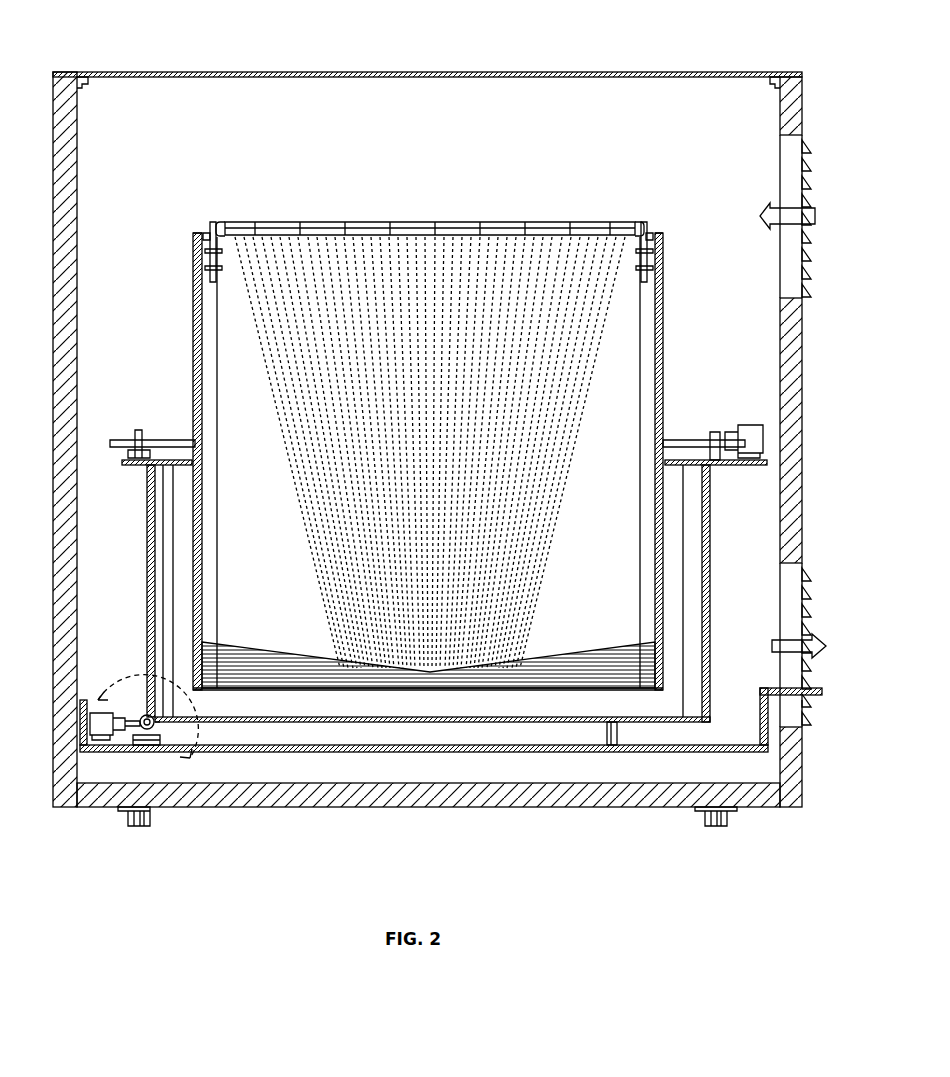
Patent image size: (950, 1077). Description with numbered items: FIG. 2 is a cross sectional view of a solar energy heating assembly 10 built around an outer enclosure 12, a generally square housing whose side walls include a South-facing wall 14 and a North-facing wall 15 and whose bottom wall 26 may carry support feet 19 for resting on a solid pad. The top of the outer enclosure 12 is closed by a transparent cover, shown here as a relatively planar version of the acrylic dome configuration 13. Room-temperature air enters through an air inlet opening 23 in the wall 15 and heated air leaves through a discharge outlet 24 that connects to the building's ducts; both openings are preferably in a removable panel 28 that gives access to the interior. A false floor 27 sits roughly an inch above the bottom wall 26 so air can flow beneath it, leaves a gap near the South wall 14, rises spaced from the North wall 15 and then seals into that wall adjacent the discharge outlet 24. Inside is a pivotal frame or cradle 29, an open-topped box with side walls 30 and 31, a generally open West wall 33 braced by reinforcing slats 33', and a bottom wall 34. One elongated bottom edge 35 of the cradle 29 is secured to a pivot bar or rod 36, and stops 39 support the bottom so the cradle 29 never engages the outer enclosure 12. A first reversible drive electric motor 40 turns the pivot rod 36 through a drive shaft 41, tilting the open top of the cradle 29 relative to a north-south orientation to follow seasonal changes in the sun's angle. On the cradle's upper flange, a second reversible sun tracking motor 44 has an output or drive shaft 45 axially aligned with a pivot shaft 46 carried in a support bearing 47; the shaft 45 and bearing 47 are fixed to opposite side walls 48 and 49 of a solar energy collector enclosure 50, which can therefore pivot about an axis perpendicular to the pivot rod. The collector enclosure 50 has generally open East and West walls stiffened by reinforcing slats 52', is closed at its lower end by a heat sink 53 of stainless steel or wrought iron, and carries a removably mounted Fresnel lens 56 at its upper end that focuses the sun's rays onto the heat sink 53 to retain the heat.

The solar energy heating assembly 10 is at (435, 455).
The outer enclosure 12 is at (435, 448).
The acrylic dome configuration 13 is at (277, 72).
The side wall 14 is at (53, 112).
The side wall 15 is at (802, 108).
The support feet 19 is at (138, 828).
The air inlet opening 23 is at (790, 275).
The discharge outlet 24 is at (797, 707).
The bottom wall 26 is at (372, 795).
The false floor 27 is at (556, 752).
The removable panel 28 is at (790, 375).
The pivotal frame or cradle 29 is at (427, 591).
The side wall 30 is at (148, 618).
The side wall 31 is at (705, 514).
The side wall 33 is at (132, 591).
The reinforcing slat 33' is at (724, 591).
The bottom wall 34 is at (452, 724).
The elongated bottom edge 35 is at (175, 700).
The pivot bar or rod 36 is at (150, 735).
The stops 39 is at (618, 735).
The first reversible drive electric motor 40 is at (107, 723).
The drive shaft 41 is at (140, 714).
The second reversible drive electrical sun tracking motor 44 is at (752, 428).
The output or drive shaft 45 is at (687, 445).
The pivot shaft 46 is at (163, 440).
The support bearing 47 is at (133, 456).
The side wall 48 is at (196, 312).
The side wall 49 is at (666, 358).
The solar energy collector enclosure 50 is at (413, 422).
The reinforcing slat 52' is at (430, 261).
The heat sink 53 is at (266, 642).
The Fresnel lens 56 is at (477, 222).